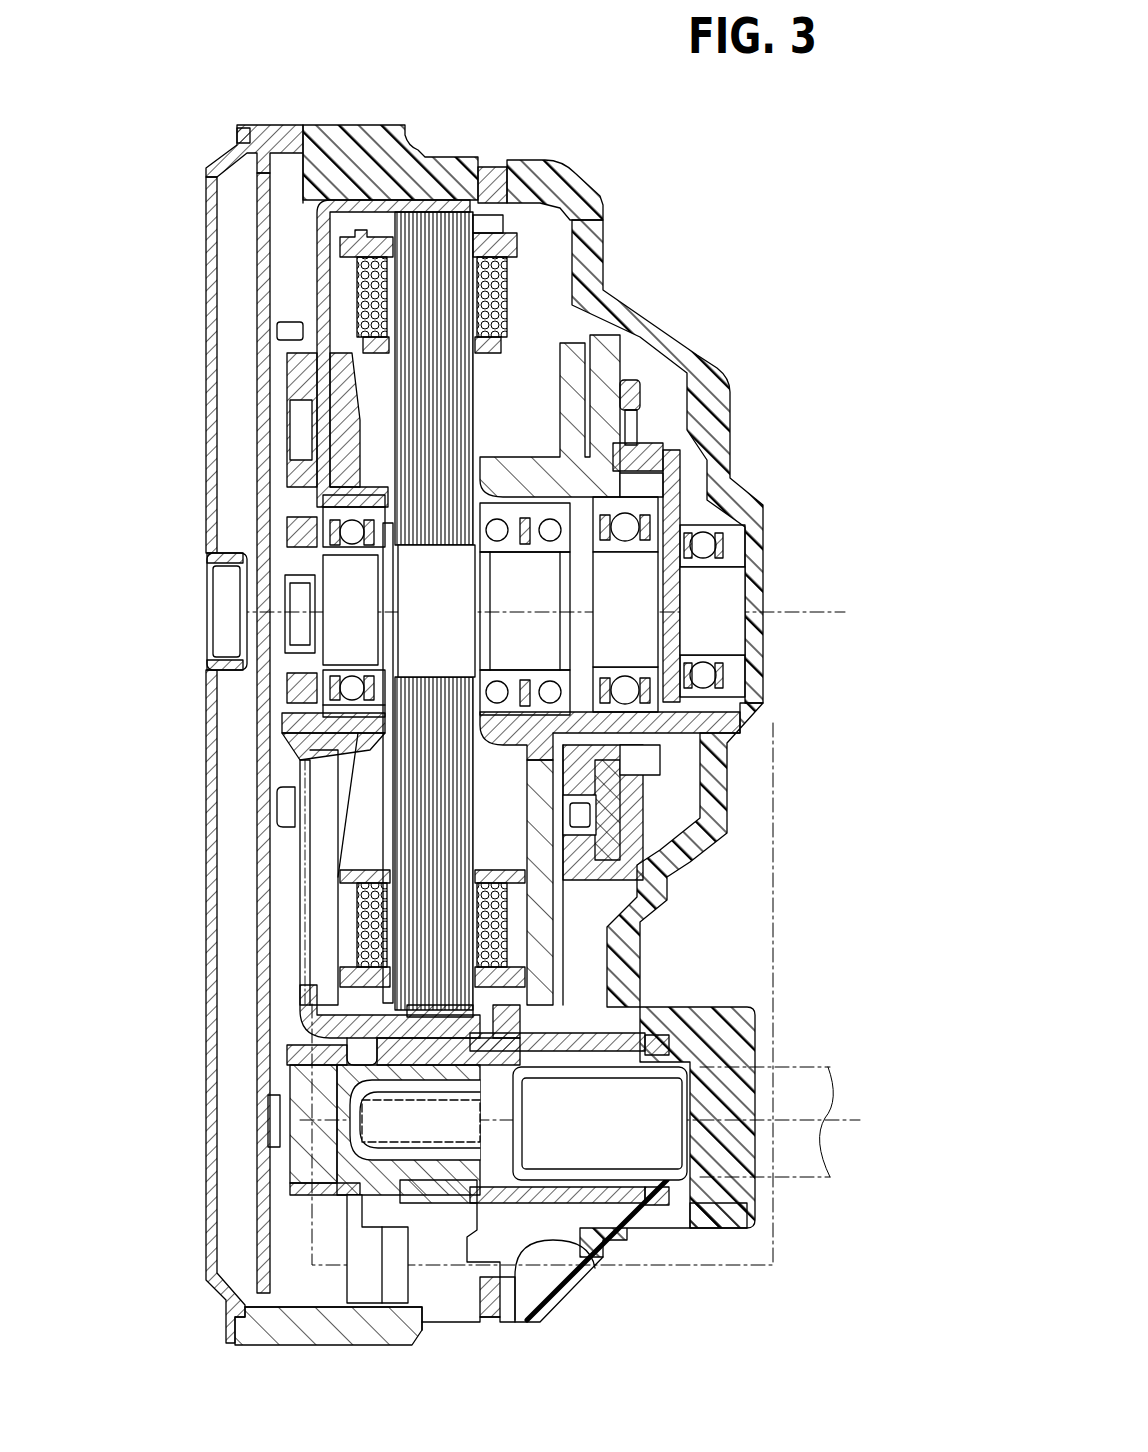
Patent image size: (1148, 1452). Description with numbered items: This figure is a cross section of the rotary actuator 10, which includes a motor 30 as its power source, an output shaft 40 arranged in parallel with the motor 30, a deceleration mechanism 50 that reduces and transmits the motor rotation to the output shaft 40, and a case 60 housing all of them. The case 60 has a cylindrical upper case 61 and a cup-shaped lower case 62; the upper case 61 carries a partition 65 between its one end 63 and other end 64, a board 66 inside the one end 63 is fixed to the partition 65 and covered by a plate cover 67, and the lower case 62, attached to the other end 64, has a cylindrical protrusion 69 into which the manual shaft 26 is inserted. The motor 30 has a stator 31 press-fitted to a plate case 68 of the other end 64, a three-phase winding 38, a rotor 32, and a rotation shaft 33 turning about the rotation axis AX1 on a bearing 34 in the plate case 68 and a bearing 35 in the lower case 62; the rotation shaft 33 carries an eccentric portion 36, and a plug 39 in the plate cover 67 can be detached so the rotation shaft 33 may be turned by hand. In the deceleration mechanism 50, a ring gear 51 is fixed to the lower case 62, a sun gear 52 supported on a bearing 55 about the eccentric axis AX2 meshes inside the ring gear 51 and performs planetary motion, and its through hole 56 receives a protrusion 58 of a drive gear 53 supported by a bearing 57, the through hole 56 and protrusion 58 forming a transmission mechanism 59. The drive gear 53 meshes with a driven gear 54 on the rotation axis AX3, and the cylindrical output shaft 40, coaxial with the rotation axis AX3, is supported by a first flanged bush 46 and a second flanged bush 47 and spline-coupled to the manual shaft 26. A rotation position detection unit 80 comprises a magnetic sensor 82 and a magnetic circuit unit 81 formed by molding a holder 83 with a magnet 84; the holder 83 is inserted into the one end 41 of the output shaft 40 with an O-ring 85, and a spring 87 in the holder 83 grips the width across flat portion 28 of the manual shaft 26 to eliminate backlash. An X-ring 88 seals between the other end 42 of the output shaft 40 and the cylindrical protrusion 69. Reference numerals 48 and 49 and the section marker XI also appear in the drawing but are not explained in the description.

The actuator 10 is at (205, 100).
The manual shaft 26 is at (795, 1180).
The width across flat portion 28 is at (360, 1045).
The motor 30 is at (505, 290).
The stator 31 is at (430, 298).
The rotor 32 is at (420, 815).
The rotation shaft 33 is at (345, 580).
The bearing 34 is at (350, 535).
The bearing 35 is at (700, 680).
The eccentric portion 36 is at (700, 560).
The three-phase winding 38 is at (370, 290).
The plug 39 is at (207, 598).
The output shaft 40 is at (620, 985).
The one end 41 is at (300, 990).
The other end 42 is at (690, 1012).
The first flanged bush 46 is at (383, 1225).
The second flanged bush 47 is at (617, 1205).
The spring seal 48 is at (430, 1200).
The gear 49 is at (568, 1245).
The deceleration mechanism 50 is at (600, 325).
The ring gear 51 is at (652, 425).
The sun gear 52 is at (640, 385).
The drive gear 53 is at (635, 385).
The driven gear 54 is at (540, 910).
The bearing 55 is at (650, 735).
The through hole 56 is at (660, 808).
The bearing 57 is at (670, 482).
The protrusion 58 is at (630, 835).
The transmission mechanism 59 is at (822, 770).
The case 60 is at (525, 80).
The upper case 61 is at (488, 190).
The lower case 62 is at (525, 175).
The one end 63 is at (300, 140).
The other end 64 is at (405, 150).
The partition 65 is at (300, 402).
The board 66 is at (262, 212).
The plate cover 67 is at (210, 755).
The plate case 68 is at (295, 340).
The cylindrical protrusion 69 is at (700, 1212).
The rotation position detection unit 80 is at (142, 1085).
The magnetic circuit unit 81 is at (300, 1157).
The magnetic sensor 82 is at (268, 1112).
The holder 83 is at (352, 1310).
The magnet 84 is at (295, 1307).
The O-ring 85 is at (415, 1225).
The spring 87 is at (340, 1070).
The X-ring 88 is at (660, 1205).
The rotation axis AX1 is at (800, 622).
The eccentric axis AX2 is at (690, 600).
The rotation axis AX3 is at (830, 1122).
The section XI is at (770, 1268).